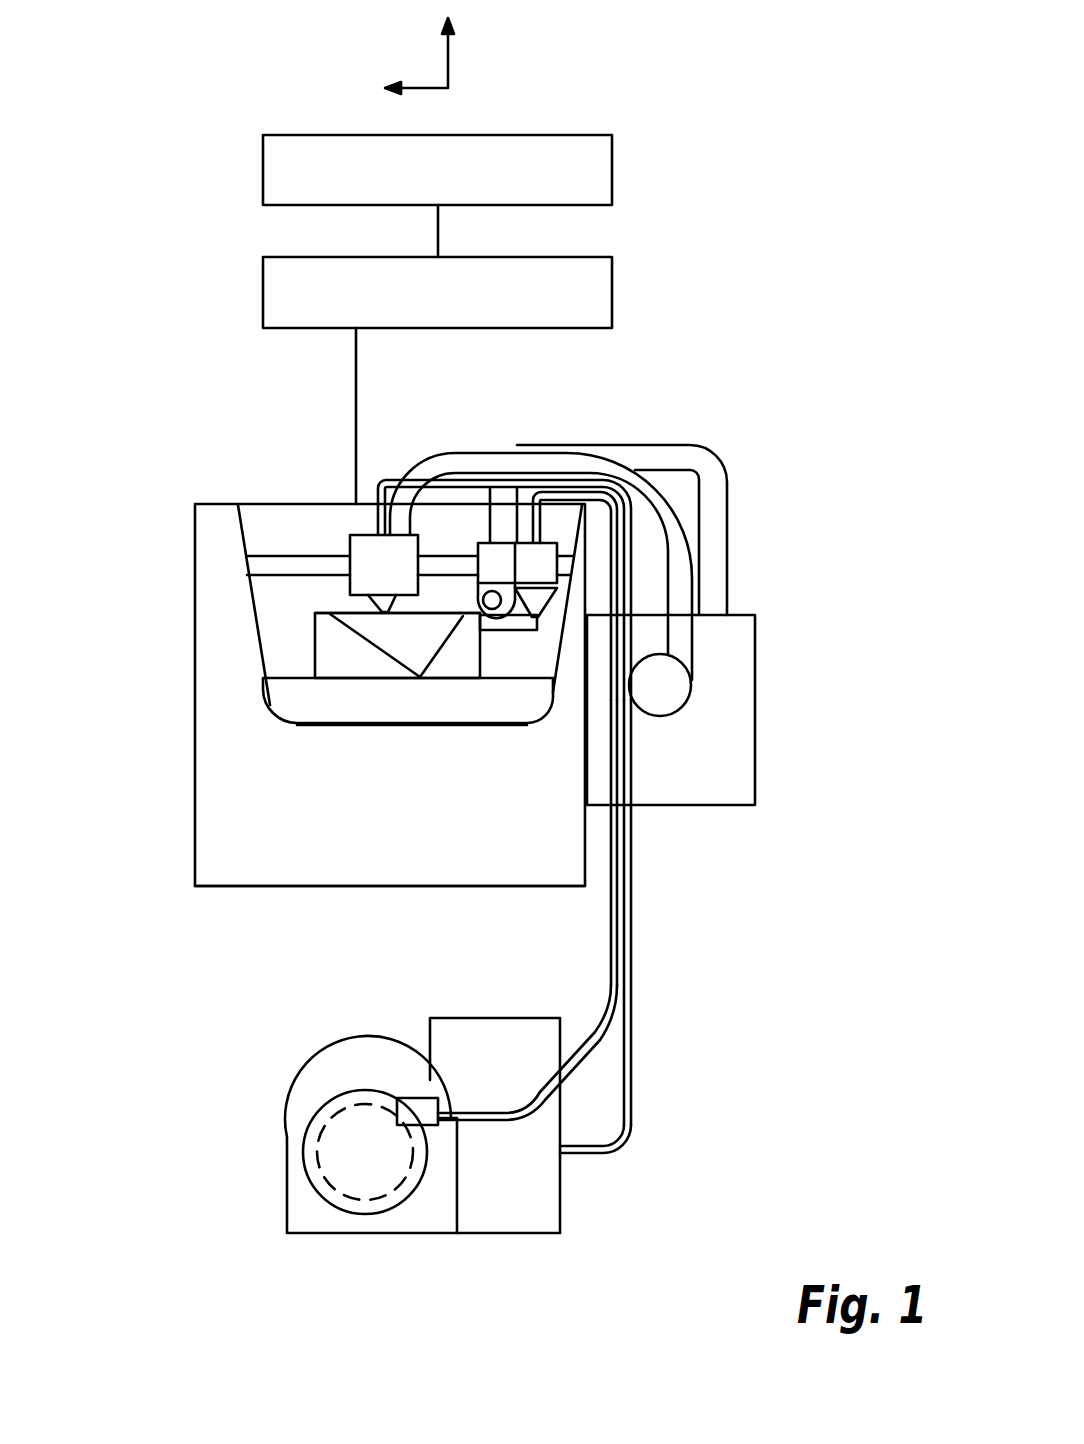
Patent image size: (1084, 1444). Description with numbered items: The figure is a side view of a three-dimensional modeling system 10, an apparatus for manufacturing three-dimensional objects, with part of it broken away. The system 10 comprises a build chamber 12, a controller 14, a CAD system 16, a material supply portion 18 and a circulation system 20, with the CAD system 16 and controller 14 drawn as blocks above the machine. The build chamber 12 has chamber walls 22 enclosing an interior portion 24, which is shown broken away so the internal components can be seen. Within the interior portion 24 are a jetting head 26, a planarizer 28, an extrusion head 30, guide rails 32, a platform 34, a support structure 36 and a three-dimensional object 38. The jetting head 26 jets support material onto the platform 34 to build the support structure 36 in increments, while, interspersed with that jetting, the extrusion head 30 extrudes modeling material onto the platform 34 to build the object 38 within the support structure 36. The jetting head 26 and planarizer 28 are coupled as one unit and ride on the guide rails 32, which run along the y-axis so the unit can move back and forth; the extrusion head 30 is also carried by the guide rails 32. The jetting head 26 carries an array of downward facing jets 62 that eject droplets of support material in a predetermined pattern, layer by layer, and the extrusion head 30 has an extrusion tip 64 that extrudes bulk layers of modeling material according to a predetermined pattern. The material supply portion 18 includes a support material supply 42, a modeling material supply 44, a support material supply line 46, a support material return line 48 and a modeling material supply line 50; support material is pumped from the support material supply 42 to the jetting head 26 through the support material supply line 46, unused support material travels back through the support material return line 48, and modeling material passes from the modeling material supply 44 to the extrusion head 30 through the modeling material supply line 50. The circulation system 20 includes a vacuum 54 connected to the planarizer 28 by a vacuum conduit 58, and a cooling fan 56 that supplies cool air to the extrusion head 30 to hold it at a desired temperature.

The three-dimensional modeling system 10 is at (150, 553).
The build chamber 12 is at (160, 823).
The controller 14 is at (587, 292).
The CAD system 16 is at (557, 178).
The material supply portion 18 is at (356, 1119).
The circulation system 20 is at (732, 600).
The chamber walls 22 is at (273, 870).
The interior portion 24 is at (470, 720).
The jetting head 26 is at (590, 559).
The planarizer 28 is at (492, 600).
The extrusion head 30 is at (367, 583).
The guide rails 32 is at (343, 560).
The platform 34 is at (297, 683).
The support structure 36 is at (345, 657).
The three-dimensional object 38 is at (380, 653).
The support material supply 42 is at (470, 1033).
The modeling material supply 44 is at (384, 1167).
The support material supply line 46 is at (613, 1150).
The support material return line 48 is at (585, 1010).
The modeling material supply line 50 is at (612, 930).
The vacuum 54 is at (735, 645).
The cooling fan 56 is at (668, 693).
The vacuum conduit 58 is at (702, 472).
The jets 62 is at (537, 602).
The extrusion tip 64 is at (367, 610).